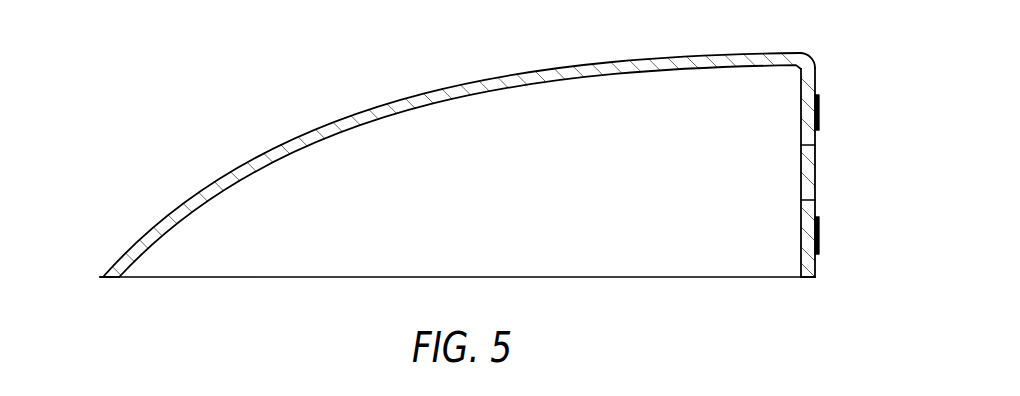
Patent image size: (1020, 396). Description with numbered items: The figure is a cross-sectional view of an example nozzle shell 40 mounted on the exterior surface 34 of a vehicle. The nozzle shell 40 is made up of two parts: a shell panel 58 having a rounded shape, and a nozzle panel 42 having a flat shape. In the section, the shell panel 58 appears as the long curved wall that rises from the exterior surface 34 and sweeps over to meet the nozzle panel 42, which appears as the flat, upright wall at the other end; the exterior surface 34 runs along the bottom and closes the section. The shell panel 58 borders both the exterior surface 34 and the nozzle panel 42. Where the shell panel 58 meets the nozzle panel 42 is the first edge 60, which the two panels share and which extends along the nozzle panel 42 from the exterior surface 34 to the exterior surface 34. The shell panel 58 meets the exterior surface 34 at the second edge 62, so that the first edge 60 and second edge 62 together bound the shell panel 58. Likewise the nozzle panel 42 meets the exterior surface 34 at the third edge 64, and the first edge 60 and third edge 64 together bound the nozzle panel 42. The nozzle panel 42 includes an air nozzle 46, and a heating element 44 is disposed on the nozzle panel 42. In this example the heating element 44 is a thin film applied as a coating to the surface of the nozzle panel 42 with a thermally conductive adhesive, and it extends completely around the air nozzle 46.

The exterior surface 34 is at (482, 277).
The nozzle shell 40 is at (463, 165).
The nozzle panel 42 is at (816, 90).
The heating element 44 is at (819, 118).
The air nozzle 46 is at (810, 146).
The shell panel 58 is at (431, 92).
The first edge 60 is at (812, 58).
The second edge 62 is at (100, 277).
The third edge 64 is at (815, 279).